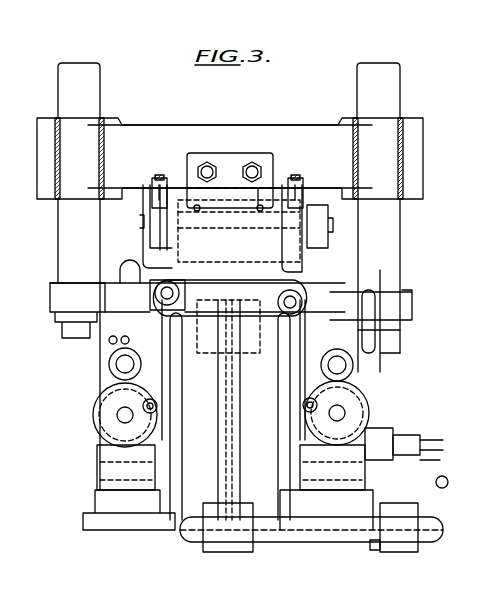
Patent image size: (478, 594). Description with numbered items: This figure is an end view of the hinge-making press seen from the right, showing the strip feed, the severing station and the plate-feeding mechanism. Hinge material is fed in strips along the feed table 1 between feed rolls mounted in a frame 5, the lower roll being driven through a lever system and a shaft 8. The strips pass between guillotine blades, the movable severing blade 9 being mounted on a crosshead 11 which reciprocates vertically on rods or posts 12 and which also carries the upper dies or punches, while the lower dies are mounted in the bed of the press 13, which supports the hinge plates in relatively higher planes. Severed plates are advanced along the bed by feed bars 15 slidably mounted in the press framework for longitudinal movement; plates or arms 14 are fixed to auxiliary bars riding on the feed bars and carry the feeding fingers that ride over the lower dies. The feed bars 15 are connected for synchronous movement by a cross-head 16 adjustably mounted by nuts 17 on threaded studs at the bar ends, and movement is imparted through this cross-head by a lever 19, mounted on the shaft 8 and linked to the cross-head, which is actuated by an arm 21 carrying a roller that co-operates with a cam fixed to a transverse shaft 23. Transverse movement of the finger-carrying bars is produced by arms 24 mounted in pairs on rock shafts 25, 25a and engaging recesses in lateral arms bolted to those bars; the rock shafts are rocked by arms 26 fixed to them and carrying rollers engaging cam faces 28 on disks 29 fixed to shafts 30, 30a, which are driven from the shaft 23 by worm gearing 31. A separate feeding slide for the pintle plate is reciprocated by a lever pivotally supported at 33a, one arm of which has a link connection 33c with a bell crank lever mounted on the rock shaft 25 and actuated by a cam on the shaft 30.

The feed table 1 is at (145, 240).
The frame 5 is at (150, 186).
The shaft 8 is at (268, 542).
The severing blade 9 is at (262, 203).
The crosshead 11 is at (230, 170).
The rods or posts 12 is at (62, 90).
The bed of the press 13 is at (58, 302).
The plates or arms 14 is at (136, 264).
The bars 15 is at (175, 286).
The cross-head 16 is at (206, 310).
The nuts 17 is at (100, 338).
The lever 19 is at (240, 402).
The arm 21 is at (398, 430).
The shaft 23 is at (200, 468).
The arms 24 is at (115, 272).
The rock shaft 25 is at (125, 364).
The rock shaft 25a is at (337, 365).
The arms 26 is at (150, 380).
The cam faces 28 is at (112, 456).
The disks 29 is at (98, 428).
The shaft 30 is at (118, 413).
The shaft 30a is at (338, 420).
The worm gearing 31 is at (110, 484).
The pivot 33a is at (105, 358).
The link connection 33c is at (100, 350).